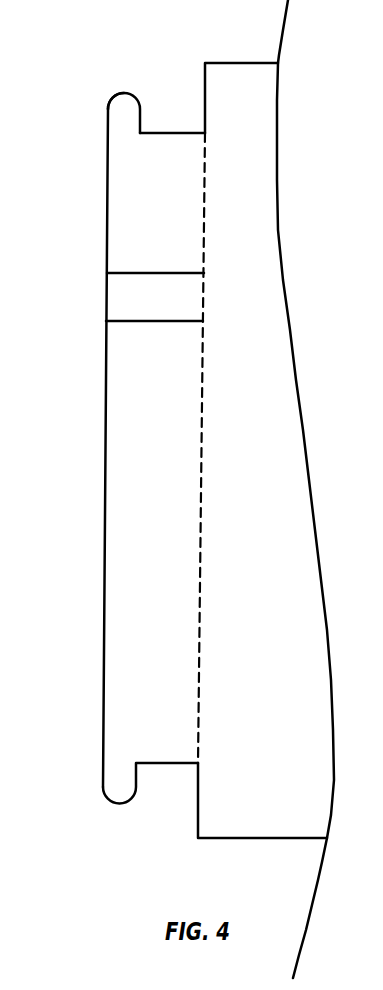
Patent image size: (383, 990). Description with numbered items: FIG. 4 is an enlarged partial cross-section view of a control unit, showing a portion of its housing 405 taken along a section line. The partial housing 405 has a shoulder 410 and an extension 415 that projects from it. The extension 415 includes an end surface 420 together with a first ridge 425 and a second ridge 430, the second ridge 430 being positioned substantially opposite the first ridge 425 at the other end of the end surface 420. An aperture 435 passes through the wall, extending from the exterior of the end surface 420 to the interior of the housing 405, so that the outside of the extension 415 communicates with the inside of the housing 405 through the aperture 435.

The housing 405 is at (258, 63).
The shoulder 410 is at (203, 70).
The extension 415 is at (170, 129).
The end surface 420 is at (108, 188).
The first ridge 425 is at (122, 112).
The second ridge 430 is at (113, 790).
The aperture 435 is at (128, 298).